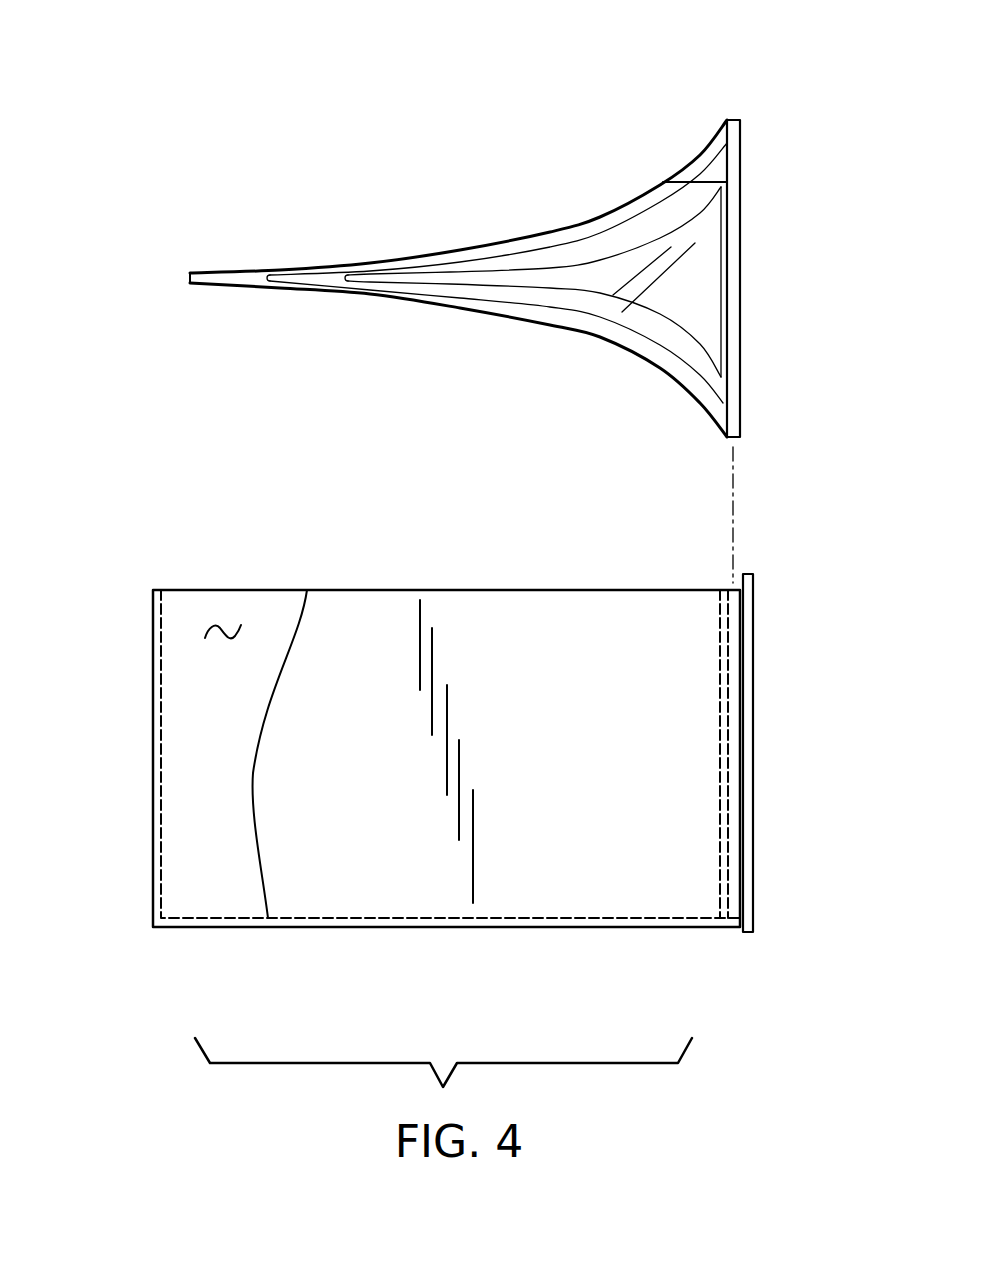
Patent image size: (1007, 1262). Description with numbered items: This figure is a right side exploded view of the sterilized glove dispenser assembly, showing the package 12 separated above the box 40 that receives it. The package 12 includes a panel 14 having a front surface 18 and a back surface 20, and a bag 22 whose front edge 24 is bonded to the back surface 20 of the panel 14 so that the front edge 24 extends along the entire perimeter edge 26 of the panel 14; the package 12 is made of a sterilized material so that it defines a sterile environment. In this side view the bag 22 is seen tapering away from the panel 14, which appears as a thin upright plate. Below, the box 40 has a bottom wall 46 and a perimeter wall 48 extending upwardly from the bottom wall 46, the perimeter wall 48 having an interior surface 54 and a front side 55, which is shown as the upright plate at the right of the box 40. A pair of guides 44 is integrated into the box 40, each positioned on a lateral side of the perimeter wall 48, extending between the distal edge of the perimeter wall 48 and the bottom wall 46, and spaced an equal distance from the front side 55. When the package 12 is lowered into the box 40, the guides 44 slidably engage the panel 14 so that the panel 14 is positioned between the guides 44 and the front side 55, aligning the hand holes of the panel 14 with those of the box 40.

The package 12 is at (500, 162).
The panel 14 is at (742, 158).
The front surface 18 is at (741, 250).
The back surface 20 is at (663, 182).
The bag 22 is at (447, 250).
The front edge 24 is at (727, 340).
The perimeter edge 26 is at (734, 120).
The box 40 is at (153, 590).
The guides 44 is at (720, 643).
The bottom wall 46 is at (307, 590).
The perimeter wall 48 is at (152, 669).
The interior surface 54 is at (226, 626).
The front side 55 is at (749, 708).